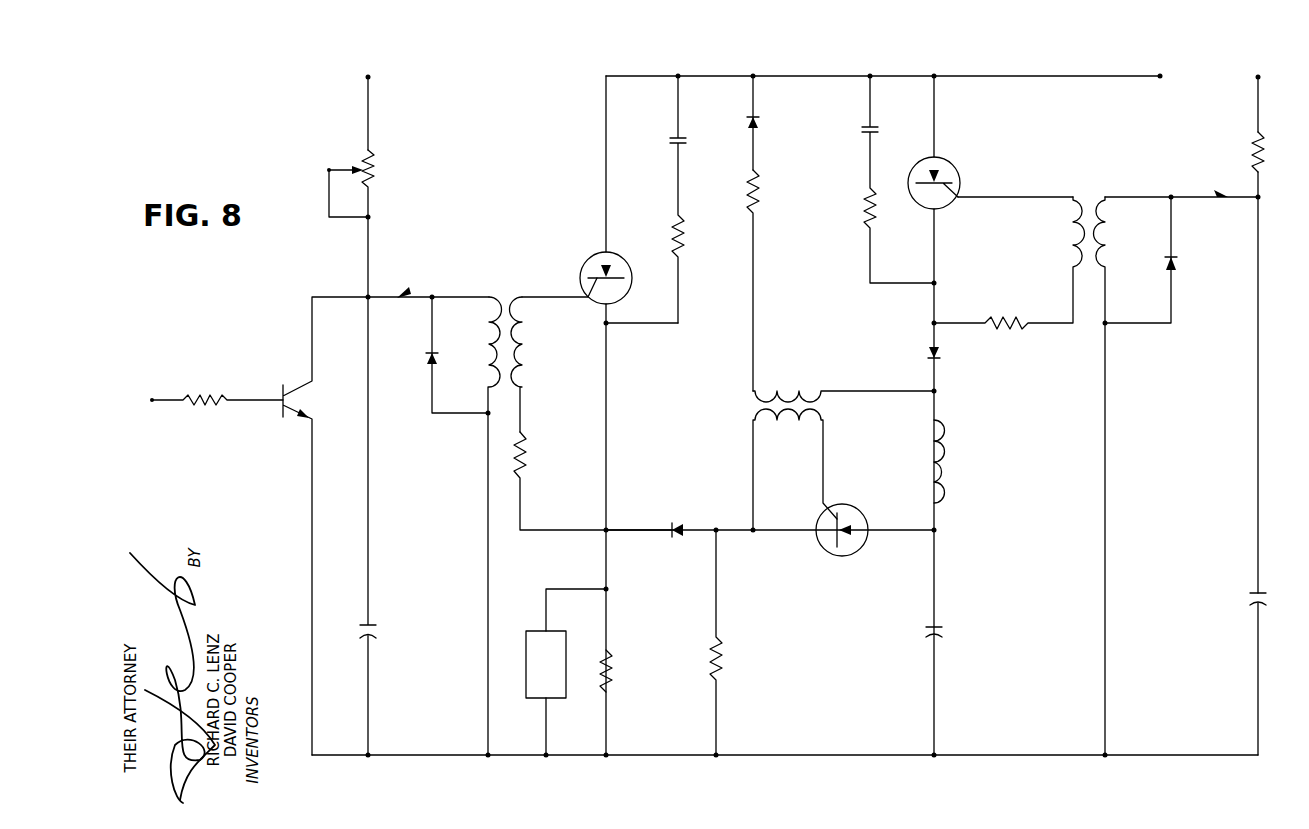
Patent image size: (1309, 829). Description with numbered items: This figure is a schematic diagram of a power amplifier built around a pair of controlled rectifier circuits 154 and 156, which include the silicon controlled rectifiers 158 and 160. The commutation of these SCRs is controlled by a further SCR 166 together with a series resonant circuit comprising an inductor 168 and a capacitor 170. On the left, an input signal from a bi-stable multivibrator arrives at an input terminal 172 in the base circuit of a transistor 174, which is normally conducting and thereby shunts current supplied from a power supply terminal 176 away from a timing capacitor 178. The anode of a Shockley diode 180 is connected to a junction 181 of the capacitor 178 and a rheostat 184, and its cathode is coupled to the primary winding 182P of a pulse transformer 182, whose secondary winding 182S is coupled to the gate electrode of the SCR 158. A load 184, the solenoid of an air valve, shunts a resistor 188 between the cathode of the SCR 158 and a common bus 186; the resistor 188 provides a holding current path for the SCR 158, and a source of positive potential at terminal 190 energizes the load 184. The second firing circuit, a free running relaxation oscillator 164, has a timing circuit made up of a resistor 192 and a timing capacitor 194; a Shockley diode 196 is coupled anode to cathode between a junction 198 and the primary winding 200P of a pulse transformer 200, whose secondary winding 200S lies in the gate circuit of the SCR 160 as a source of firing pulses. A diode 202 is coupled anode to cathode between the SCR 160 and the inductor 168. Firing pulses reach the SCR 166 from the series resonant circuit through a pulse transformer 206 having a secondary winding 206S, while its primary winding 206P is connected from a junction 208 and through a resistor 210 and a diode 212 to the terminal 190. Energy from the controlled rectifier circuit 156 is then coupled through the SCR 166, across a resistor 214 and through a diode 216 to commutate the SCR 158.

The controlled rectifier circuit 154 is at (672, 380).
The controlled rectifier circuit 156 is at (897, 459).
The silicon controlled rectifier 158 is at (592, 250).
The silicon controlled rectifier 160 is at (946, 166).
The relaxation oscillator firing circuit 164 is at (1152, 296).
The SCR 166 is at (860, 514).
The inductor 168 is at (946, 460).
The capacitor 170 is at (944, 634).
The input terminal 172 is at (154, 400).
The transistor 174 is at (295, 380).
The terminal 176 is at (364, 78).
The timing capacitor 178 is at (371, 628).
The Shockley diode 180 is at (403, 290).
The junction 181 is at (366, 296).
The pulse transformer 182 is at (518, 498).
The primary winding 182P is at (486, 347).
The secondary winding 182S is at (496, 260).
The rheostat / load 184 is at (374, 170).
The common bus 186 is at (805, 753).
The resistor 188 is at (612, 662).
The terminal 190 is at (1160, 74).
The resistor 192 is at (1250, 146).
The timing capacitor 194 is at (1250, 592).
The Shockley diode 196 is at (1218, 196).
The junction 198 is at (1264, 200).
The pulse transformer 200 is at (1044, 452).
The secondary winding 200S is at (1070, 243).
The primary winding 200P is at (1112, 248).
The diode 202 is at (928, 352).
The pulse transformer 206 is at (803, 440).
The primary winding 206P is at (794, 386).
The secondary winding 206S is at (795, 469).
The junction 208 is at (942, 394).
The resistor 210 is at (761, 196).
The diode 212 is at (760, 122).
The resistor 214 is at (724, 662).
The diode 216 is at (678, 523).